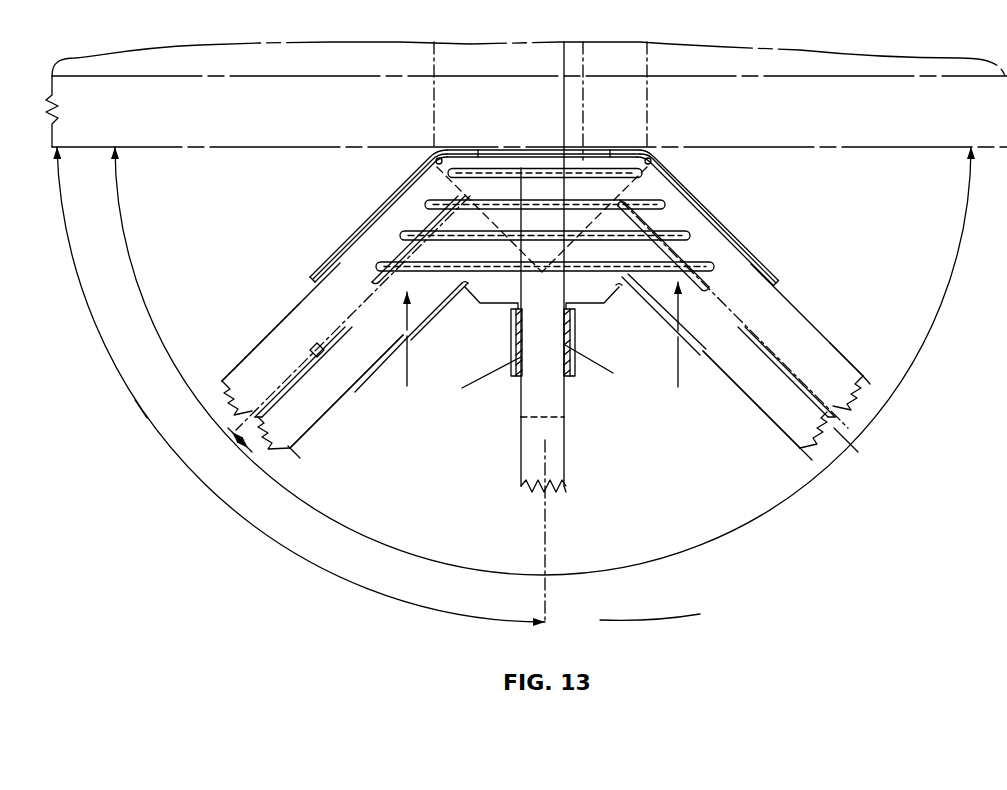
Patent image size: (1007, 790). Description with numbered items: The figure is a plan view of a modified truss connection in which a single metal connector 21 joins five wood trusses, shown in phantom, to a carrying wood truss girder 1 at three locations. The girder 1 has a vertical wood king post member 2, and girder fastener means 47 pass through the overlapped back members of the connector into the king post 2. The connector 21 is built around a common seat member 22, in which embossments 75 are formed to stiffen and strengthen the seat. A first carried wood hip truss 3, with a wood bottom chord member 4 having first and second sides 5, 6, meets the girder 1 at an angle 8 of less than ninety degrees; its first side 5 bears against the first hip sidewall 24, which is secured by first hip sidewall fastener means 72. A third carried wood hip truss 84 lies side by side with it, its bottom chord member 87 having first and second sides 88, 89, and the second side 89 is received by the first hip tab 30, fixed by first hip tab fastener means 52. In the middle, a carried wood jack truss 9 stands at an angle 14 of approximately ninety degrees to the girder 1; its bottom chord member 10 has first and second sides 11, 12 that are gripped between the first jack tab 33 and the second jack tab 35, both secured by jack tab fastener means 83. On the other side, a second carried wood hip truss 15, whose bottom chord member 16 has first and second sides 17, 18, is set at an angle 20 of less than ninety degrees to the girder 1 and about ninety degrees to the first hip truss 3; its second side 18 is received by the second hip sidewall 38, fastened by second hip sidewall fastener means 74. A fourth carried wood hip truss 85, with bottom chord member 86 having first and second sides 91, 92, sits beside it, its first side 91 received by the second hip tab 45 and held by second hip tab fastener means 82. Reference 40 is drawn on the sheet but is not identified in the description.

The carrying wood truss girder 1 is at (221, 153).
The vertical wood king post member 2 is at (652, 90).
The first carried wood hip truss 3 is at (215, 370).
The wood bottom chord member 4 is at (228, 368).
The first side 5 is at (292, 312).
The second side 6 is at (314, 350).
The angle 8 is at (143, 298).
The carried wood jack truss 9 is at (565, 498).
The wood bottom chord member 10 is at (524, 498).
The first side 11 is at (565, 442).
The second side 12 is at (521, 430).
The angle 14 is at (196, 477).
The second carried wood hip truss 15 is at (862, 364).
The wood bottom chord member 16 is at (863, 378).
The first side 17 is at (745, 328).
The second side 18 is at (820, 330).
The angle 20 is at (928, 327).
The metal connector 21 is at (718, 213).
The common seat member 22 is at (612, 198).
The first hip sidewall 24 is at (363, 224).
The first hip tab 30 is at (433, 317).
The first jack tab 33 is at (558, 345).
The second jack tab 35 is at (578, 320).
The second hip sidewall 38 is at (731, 234).
The arc bottom 40 is at (644, 610).
The second hip tab 45 is at (660, 322).
The girder fastener means 47 is at (588, 106).
The first hip tab fastener means 52 is at (407, 372).
The first hip sidewall fastener means 72 is at (388, 262).
The second hip sidewall fastener means 74 is at (705, 260).
The embossments 75 is at (521, 190).
The second hip tab fastener means 82 is at (678, 387).
The jack tab fastener means 83 is at (490, 378).
The third carried wood hip truss 84 is at (303, 450).
The fourth carried wood hip truss 85 is at (794, 441).
The wood bottom chord member 86 is at (803, 452).
The wood bottom chord member 87 is at (313, 427).
The first side 88 is at (376, 296).
The second side 89 is at (357, 386).
The first side 91 is at (738, 383).
The second side 92 is at (780, 358).